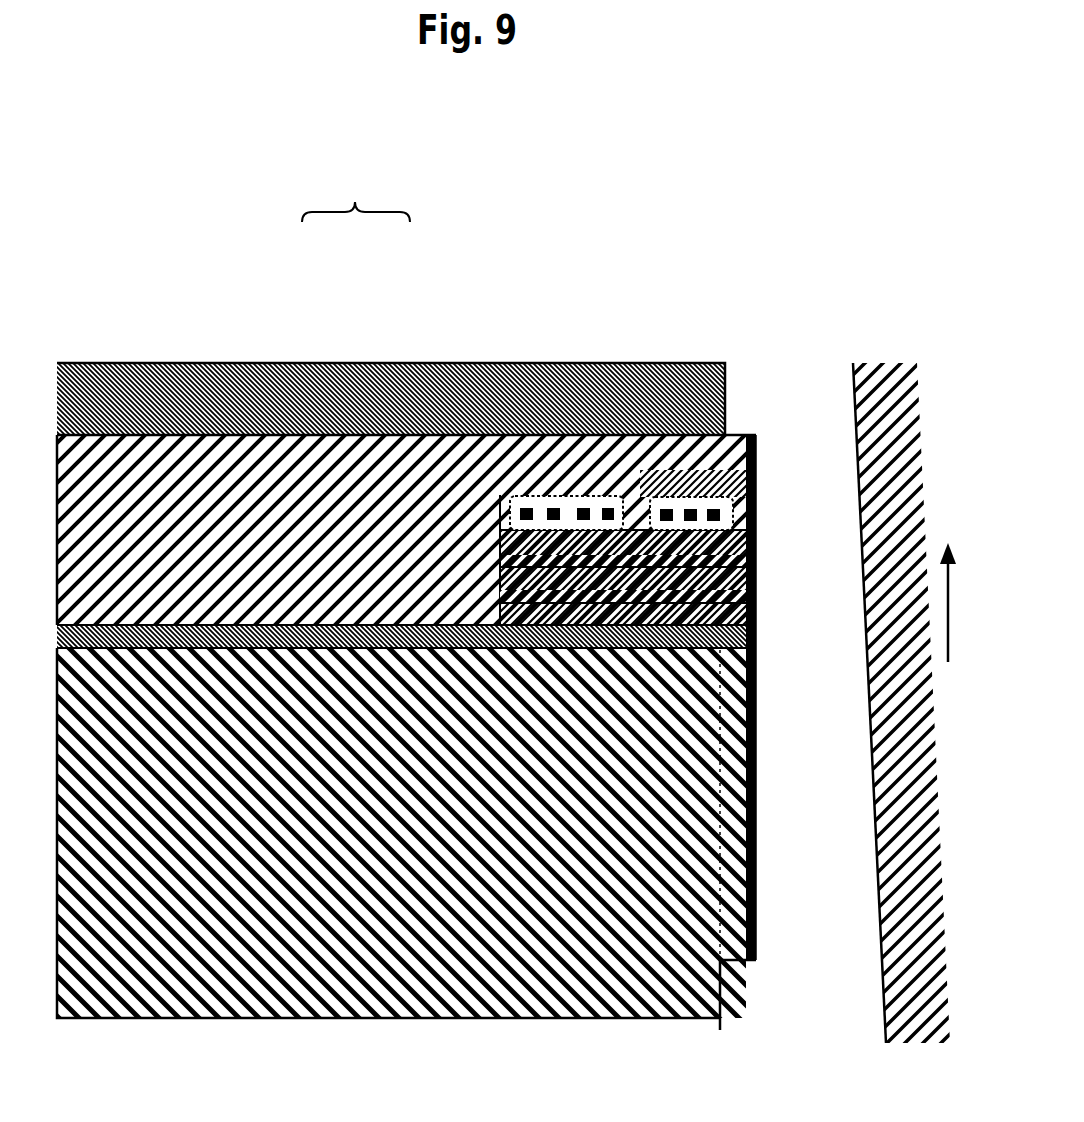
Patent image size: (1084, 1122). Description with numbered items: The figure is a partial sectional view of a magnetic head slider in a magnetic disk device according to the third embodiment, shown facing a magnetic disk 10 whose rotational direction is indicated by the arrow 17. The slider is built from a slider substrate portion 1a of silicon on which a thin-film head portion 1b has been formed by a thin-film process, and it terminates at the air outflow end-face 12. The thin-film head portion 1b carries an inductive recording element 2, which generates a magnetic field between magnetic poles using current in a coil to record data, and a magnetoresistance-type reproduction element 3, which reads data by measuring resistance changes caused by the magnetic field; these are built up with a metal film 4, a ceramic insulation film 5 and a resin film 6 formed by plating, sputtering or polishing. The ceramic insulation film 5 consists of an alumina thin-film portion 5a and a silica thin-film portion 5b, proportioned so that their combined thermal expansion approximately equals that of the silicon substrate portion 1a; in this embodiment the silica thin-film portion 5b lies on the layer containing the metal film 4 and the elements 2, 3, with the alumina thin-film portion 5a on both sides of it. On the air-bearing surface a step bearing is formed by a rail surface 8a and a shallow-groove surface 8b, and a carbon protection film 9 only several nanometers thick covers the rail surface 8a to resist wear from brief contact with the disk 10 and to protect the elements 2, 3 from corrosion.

The slider substrate portion 1a is at (162, 973).
The thin-film head portion 1b is at (213, 390).
The inductive recording element 2 is at (758, 507).
The magnetoresistance-type reproduction element 3 is at (758, 583).
The metal film 4 is at (628, 515).
The ceramic insulation film 5 is at (356, 199).
The alumina thin-film portion 5a is at (313, 363).
The silica thin-film portion 5b is at (373, 497).
The resin film 6 is at (690, 445).
The rail surface 8a is at (754, 723).
The shallow-groove surface 8b is at (726, 394).
The carbon protection film 9 is at (754, 772).
The magnetic disk 10 is at (873, 733).
The air outflow end-face 12 is at (140, 363).
The rotational direction 17 is at (947, 589).